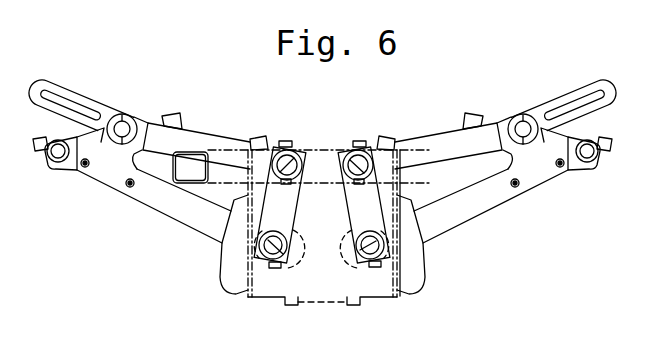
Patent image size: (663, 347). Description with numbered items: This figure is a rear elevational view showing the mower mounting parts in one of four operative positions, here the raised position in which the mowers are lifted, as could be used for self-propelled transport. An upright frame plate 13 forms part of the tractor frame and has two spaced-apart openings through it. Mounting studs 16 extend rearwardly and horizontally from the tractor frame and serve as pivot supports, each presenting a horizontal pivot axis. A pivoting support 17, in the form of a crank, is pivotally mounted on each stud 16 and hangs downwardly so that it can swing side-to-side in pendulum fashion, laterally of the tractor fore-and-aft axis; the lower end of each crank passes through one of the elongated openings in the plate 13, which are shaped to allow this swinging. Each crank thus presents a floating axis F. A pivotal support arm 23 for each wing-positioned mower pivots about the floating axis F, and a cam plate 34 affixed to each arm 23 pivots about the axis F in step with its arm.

The upright frame plate 13 is at (377, 283).
The mounting studs 16 is at (343, 150).
The pivoting support 17 is at (395, 194).
The pivotal support arm 23 is at (167, 207).
The cam plate 34 is at (382, 218).
The floating axis F is at (361, 253).